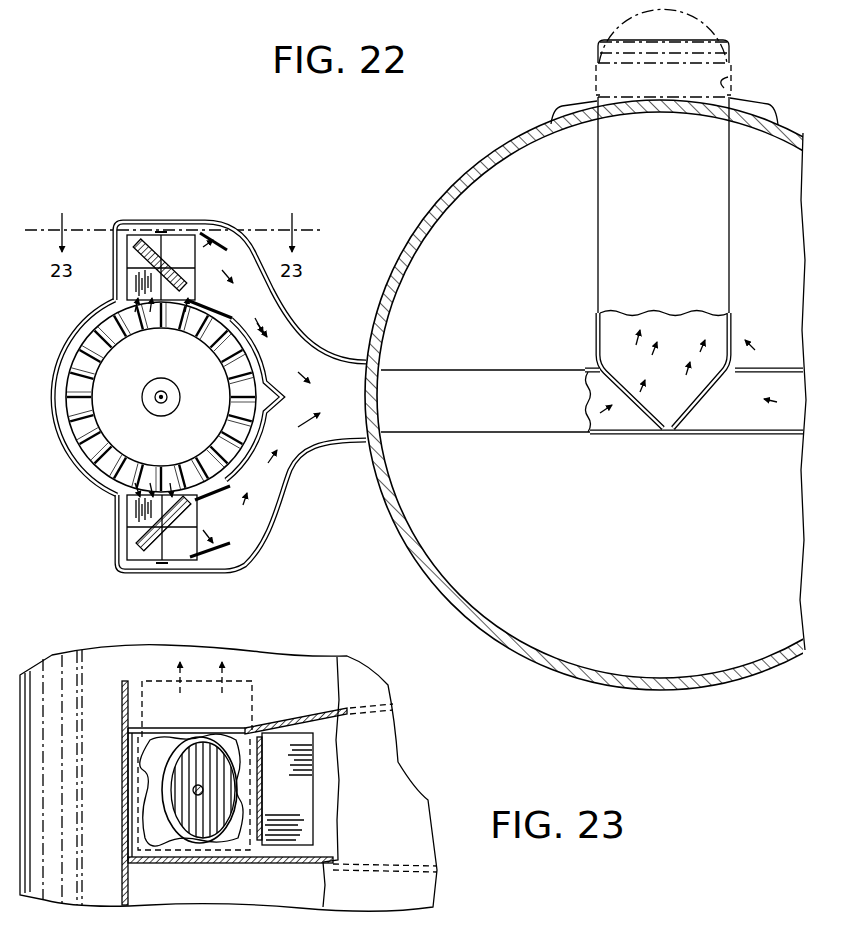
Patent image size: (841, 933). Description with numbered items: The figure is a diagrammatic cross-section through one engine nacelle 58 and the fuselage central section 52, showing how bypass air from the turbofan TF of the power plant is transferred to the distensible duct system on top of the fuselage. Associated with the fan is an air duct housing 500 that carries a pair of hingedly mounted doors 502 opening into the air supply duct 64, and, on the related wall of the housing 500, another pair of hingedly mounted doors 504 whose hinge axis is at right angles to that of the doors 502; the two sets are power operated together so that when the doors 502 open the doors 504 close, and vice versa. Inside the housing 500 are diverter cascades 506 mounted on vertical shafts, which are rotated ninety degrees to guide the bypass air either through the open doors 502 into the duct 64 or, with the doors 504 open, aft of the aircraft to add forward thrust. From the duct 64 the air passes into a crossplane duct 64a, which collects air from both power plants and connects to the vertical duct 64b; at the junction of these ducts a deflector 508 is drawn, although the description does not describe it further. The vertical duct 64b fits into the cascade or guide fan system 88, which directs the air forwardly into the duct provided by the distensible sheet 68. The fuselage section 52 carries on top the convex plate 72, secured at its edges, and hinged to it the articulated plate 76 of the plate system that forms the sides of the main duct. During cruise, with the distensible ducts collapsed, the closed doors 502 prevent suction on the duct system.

In FIG. 22, the fuselage central section 52 is at (532, 650).
In FIG. 22, the engine nacelle 58 is at (117, 516).
In FIG. 23, the engine nacelle 58 is at (402, 768).
In FIG. 22, the air supply duct 64 is at (360, 361).
In FIG. 22, the crossplane duct 64a is at (557, 422).
In FIG. 22, the vertical duct 64b is at (603, 222).
In FIG. 22, the distensible sheet 68 is at (612, 35).
In FIG. 23, the distensible sheet 68 is at (332, 722).
In FIG. 22, the convex plate 72 is at (560, 107).
In FIG. 22, the articulated plate 76 is at (596, 72).
In FIG. 22, the cascade or guide fan system 88 is at (593, 41).
In FIG. 22, the air duct housing 500 is at (130, 206).
In FIG. 23, the air duct housing 500 is at (165, 860).
In FIG. 22, the hingedly mounted doors 502 is at (217, 308).
In FIG. 23, the hingedly mounted doors 502 is at (275, 842).
In FIG. 22, the hingedly mounted doors 504 is at (156, 240).
In FIG. 23, the hingedly mounted doors 504 is at (142, 700).
In FIG. 22, the diverter cascades 506 is at (150, 263).
In FIG. 23, the diverter cascades 506 is at (218, 845).
In FIG. 22, the deflector 508 is at (683, 430).
In FIG. 22, the turbofan TF is at (90, 453).